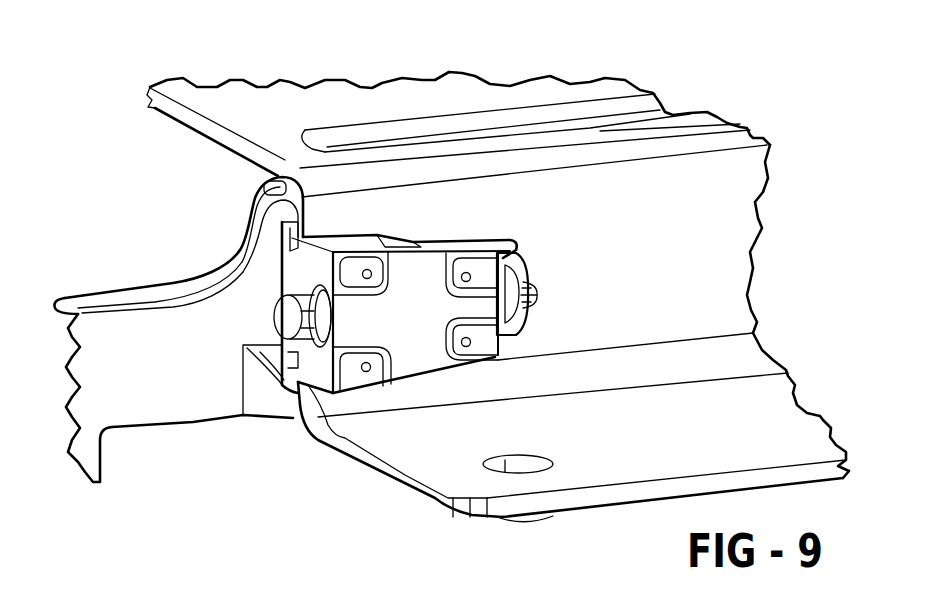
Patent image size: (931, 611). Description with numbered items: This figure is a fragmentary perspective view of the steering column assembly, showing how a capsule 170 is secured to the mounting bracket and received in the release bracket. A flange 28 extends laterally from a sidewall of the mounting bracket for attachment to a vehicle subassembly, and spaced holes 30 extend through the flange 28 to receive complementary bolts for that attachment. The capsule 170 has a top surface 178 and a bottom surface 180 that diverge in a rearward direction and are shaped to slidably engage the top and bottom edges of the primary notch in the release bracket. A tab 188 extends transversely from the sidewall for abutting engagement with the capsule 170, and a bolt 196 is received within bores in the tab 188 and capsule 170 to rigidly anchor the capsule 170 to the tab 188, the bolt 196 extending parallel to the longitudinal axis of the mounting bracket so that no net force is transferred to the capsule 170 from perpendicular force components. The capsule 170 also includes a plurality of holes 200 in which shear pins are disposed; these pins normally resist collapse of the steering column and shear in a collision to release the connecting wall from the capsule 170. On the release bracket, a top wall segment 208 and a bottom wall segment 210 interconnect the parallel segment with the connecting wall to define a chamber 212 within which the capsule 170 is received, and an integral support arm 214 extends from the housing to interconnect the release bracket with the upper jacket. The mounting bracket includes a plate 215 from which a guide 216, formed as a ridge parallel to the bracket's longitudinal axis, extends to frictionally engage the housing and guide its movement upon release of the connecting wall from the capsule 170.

The flange 28 is at (597, 497).
The holes 30 is at (533, 470).
The capsule 170 is at (416, 343).
The top surface 178 is at (352, 240).
The bottom surface 180 is at (297, 415).
The tab 188 is at (530, 324).
The bolt 196 is at (277, 313).
The holes 200 is at (371, 274).
The top wall segment 208 is at (278, 195).
The bottom wall segment 210 is at (273, 420).
The chamber 212 is at (280, 258).
The support arm 214 is at (157, 287).
The plate 215 is at (487, 103).
The guide 216 is at (617, 108).